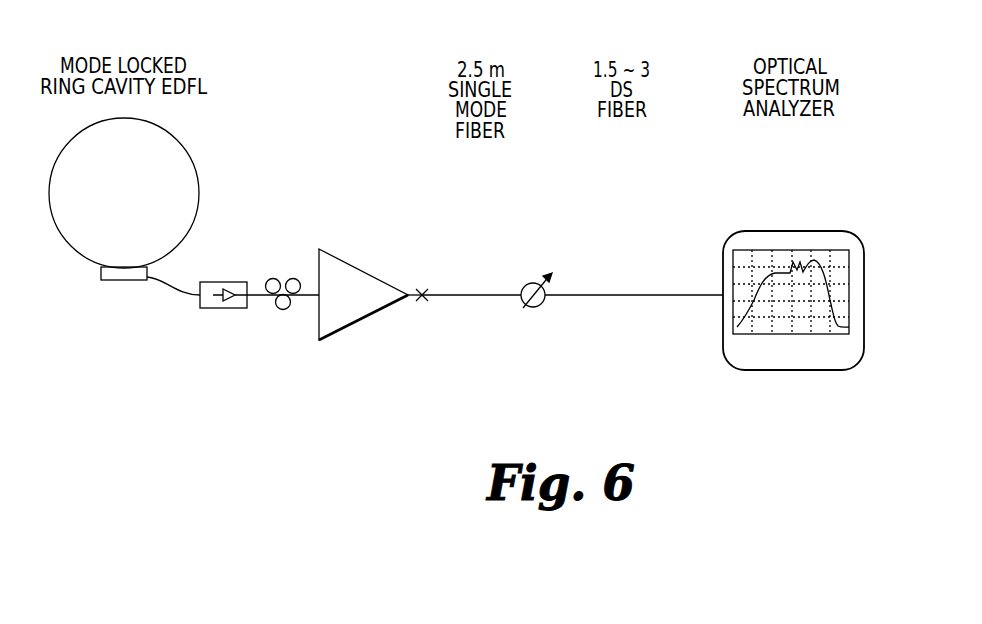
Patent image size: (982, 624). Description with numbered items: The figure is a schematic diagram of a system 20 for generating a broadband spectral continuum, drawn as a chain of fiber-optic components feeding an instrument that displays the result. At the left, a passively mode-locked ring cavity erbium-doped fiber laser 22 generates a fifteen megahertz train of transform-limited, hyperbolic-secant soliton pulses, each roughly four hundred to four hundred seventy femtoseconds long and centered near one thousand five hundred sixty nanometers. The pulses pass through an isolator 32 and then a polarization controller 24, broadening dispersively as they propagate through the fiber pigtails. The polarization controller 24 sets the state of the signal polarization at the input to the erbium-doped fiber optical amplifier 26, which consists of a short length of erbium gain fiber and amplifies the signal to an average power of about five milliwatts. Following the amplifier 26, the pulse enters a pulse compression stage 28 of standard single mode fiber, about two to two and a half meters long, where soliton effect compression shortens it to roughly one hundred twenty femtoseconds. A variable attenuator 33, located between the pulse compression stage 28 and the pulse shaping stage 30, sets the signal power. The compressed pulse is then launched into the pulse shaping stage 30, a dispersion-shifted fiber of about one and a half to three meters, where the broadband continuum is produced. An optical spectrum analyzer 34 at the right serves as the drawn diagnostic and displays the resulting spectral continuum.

The system 20 is at (680, 100).
The passively mode-locked ring cavity erbium-doped fiber laser 22 is at (199, 192).
The polarization controller 24 is at (273, 278).
The erbium-doped fiber optical amplifier 26 is at (353, 262).
The pulse compression stage 28 is at (447, 295).
The pulse shaping stage 30 is at (599, 294).
The isolator 32 is at (223, 308).
The variable attenuator 33 is at (533, 310).
The optical spectrum analyzer 34 is at (783, 231).